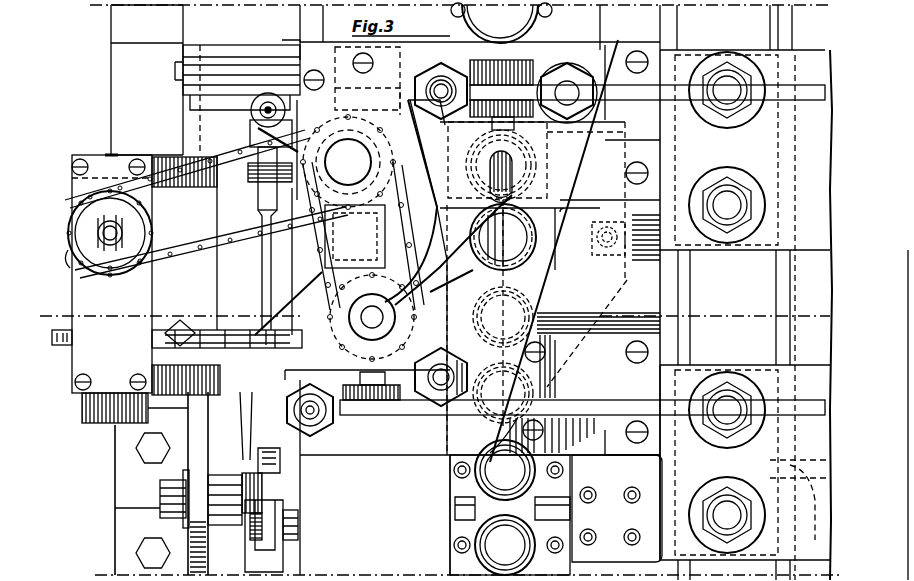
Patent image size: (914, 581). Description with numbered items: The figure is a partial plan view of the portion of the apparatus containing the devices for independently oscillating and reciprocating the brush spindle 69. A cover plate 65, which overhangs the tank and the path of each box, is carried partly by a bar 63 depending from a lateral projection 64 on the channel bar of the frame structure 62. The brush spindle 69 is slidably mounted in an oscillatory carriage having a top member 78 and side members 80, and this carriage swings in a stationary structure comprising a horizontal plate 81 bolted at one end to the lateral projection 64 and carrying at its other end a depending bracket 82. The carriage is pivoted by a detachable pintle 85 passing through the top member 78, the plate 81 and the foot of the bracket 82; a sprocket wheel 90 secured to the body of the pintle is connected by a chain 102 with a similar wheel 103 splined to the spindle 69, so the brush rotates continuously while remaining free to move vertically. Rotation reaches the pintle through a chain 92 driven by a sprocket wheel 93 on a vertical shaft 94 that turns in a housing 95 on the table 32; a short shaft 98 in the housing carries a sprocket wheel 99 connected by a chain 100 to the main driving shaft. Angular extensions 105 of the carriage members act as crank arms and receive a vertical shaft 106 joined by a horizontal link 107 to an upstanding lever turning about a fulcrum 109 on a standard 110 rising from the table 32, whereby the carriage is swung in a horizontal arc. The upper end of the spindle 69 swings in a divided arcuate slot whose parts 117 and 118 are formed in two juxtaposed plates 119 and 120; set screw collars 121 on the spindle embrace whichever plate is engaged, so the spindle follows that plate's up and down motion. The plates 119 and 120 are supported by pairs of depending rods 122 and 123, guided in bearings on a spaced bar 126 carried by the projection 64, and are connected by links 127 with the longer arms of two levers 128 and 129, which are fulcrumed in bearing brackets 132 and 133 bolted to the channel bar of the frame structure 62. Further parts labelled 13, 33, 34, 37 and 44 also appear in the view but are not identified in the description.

The center line 13 is at (435, 307).
The table 32 is at (125, 100).
The frame upright 33 is at (103, 28).
The bracket 34 is at (165, 73).
The bearing block 37 is at (457, 561).
The cylinder 44 is at (285, 22).
The frame structure 62 is at (760, 20).
The bar 63 is at (648, 197).
The lateral projection 64 is at (610, 216).
The plate 65 is at (554, 251).
The vertical spindle 69 is at (358, 322).
The top member 78 is at (363, 236).
The side members 80 is at (398, 190).
The horizontal plate 81 is at (285, 50).
The depending bracket 82 is at (381, 65).
The pintle 85 is at (230, 197).
The sprocket wheel 90 is at (348, 112).
The chain 92 is at (153, 160).
The sprocket wheel 93 is at (70, 255).
The vertical shaft 94 is at (88, 215).
The housing 95 is at (130, 289).
The short shaft 98 is at (108, 153).
The sprocket wheel 99 is at (52, 340).
The chain 100 is at (200, 323).
The chain 102 is at (262, 268).
The sprocket wheel 103 is at (440, 290).
The angular extensions 105 is at (250, 130).
The vertical shaft 106 is at (266, 103).
The horizontal link 107 is at (253, 288).
The fulcrum 109 is at (160, 497).
The standard 110 is at (120, 530).
The slot part 117 is at (555, 265).
The slot part 118 is at (529, 167).
The plate 119 is at (425, 446).
The plate 120 is at (605, 120).
The set screw collars 121 is at (340, 310).
The depending rods 122 is at (318, 435).
The depending rods 123 is at (600, 45).
The spaced bar 126 is at (650, 330).
The links 127 is at (498, 80).
The lever 128 is at (615, 407).
The lever 129 is at (685, 95).
The bearing bracket 132 is at (759, 462).
The bearing bracket 133 is at (750, 192).